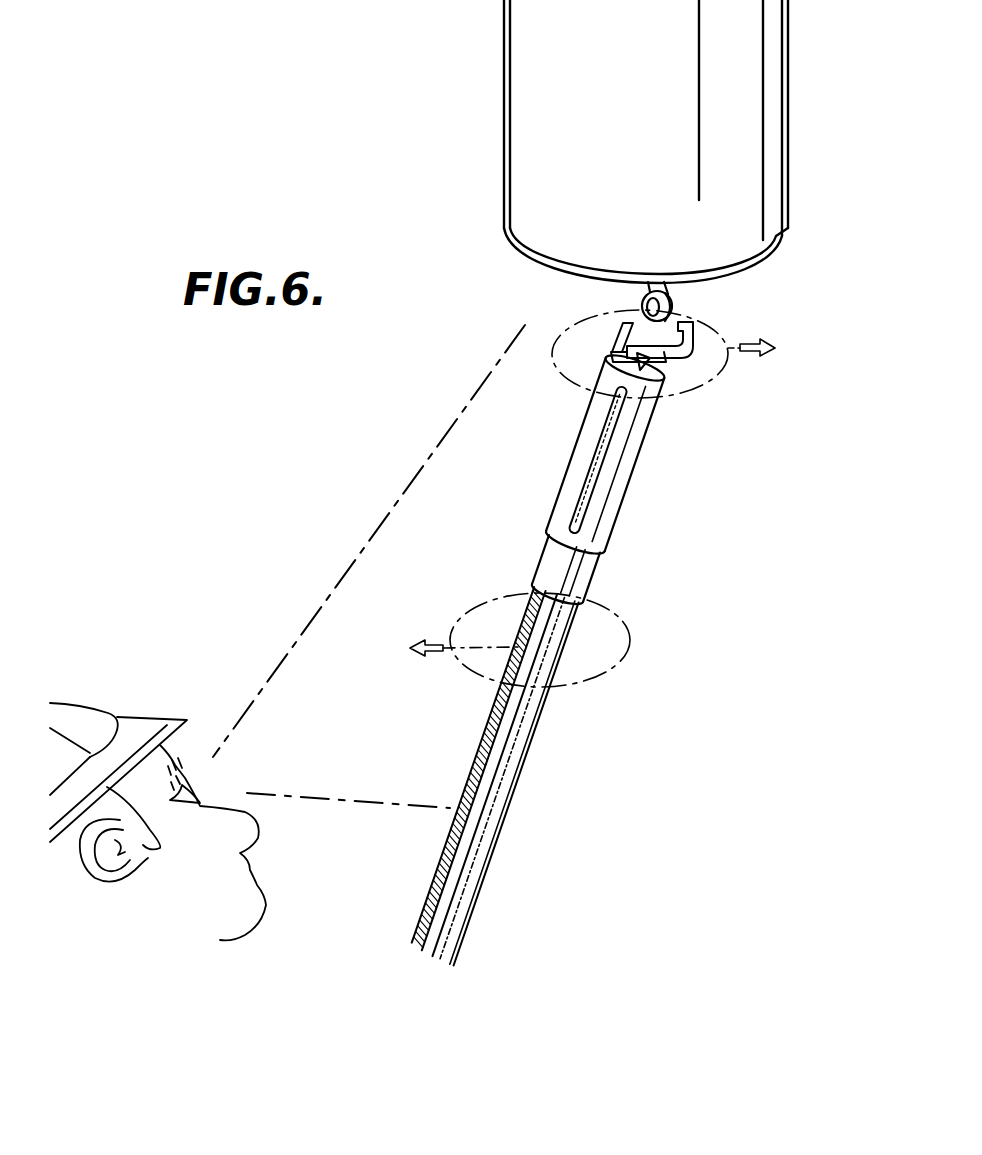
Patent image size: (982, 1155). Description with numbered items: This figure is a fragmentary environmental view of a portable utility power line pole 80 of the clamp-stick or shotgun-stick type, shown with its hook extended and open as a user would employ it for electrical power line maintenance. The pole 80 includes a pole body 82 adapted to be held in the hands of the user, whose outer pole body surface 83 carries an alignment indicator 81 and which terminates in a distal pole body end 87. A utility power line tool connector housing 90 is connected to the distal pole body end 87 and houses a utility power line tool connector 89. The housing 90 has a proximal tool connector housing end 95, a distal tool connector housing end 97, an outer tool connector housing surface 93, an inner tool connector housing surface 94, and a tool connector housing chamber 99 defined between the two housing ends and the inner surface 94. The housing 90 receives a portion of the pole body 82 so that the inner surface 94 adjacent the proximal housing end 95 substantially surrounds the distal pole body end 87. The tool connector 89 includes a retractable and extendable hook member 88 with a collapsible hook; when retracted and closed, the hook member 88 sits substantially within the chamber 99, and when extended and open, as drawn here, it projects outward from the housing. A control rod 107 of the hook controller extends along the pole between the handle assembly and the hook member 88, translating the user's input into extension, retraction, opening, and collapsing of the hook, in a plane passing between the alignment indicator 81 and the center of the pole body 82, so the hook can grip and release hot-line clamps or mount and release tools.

The portable utility power line pole 80 is at (560, 776).
The alignment indicator 81 is at (480, 770).
The pole body 82 is at (530, 804).
The outer pole body surface 83 is at (470, 850).
The distal pole body end 87 is at (598, 458).
The retractable and extendable hook member 88 is at (662, 372).
The utility power line tool connector 89 is at (703, 324).
The utility power line tool connector housing 90 is at (622, 482).
The outer tool connector housing surface 93 is at (582, 447).
The inner tool connector housing surface 94 is at (533, 589).
The proximal tool connector housing end 95 is at (587, 602).
The distal tool connector housing end 97 is at (612, 356).
The tool connector housing chamber 99 is at (665, 361).
The control rod 107 is at (528, 733).